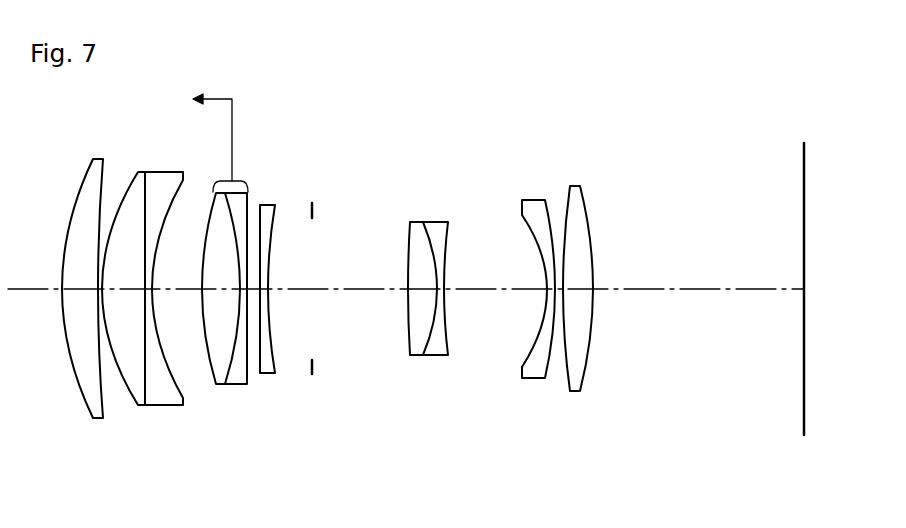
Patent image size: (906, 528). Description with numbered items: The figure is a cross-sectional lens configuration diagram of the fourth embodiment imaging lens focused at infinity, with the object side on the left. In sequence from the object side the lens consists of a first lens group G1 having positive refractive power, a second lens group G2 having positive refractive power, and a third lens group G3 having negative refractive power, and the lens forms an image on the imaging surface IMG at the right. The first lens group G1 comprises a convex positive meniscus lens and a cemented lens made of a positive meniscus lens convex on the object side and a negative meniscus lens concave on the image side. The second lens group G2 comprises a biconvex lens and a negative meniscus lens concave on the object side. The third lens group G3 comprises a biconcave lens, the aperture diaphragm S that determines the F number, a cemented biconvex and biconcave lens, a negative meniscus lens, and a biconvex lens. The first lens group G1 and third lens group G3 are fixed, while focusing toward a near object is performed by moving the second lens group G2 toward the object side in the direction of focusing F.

The first lens group G1 is at (201, 418).
The second lens group G2 is at (250, 388).
The third lens group G3 is at (593, 392).
The aperture diaphragm S is at (312, 218).
The direction of focusing F is at (220, 129).
The imaging surface IMG is at (804, 417).